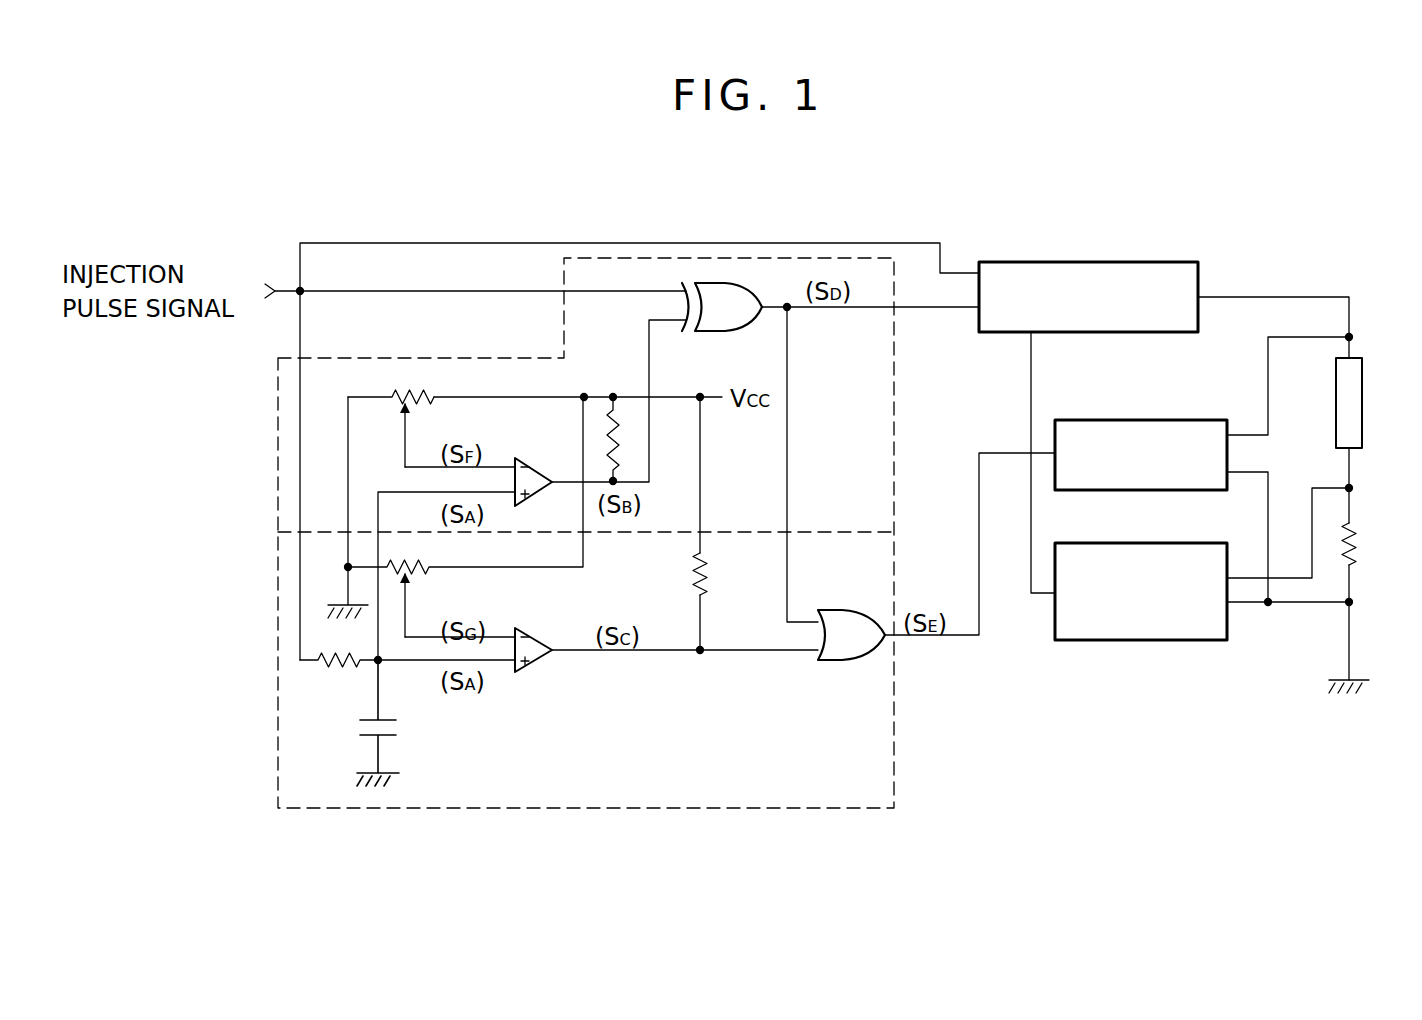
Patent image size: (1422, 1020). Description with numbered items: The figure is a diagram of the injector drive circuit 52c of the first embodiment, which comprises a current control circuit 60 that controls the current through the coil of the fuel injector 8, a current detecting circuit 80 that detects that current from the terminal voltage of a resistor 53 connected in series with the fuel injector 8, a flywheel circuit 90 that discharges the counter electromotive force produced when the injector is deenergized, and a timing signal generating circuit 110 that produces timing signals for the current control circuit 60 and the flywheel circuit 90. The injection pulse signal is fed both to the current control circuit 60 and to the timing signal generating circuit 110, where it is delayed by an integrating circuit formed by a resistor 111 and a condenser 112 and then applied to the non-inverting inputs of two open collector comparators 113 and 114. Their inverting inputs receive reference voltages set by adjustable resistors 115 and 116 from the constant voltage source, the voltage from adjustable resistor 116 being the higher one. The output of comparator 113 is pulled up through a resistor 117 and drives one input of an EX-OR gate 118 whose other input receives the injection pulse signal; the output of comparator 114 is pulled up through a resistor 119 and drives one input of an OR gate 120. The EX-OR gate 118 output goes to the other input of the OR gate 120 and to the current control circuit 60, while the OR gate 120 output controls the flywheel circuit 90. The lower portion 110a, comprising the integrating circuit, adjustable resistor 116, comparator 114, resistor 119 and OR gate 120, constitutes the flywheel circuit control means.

The injector drive circuit 52c is at (828, 218).
The timing signal generating circuit 110 is at (592, 256).
The second comparator section 110a is at (813, 528).
The resistor 111 is at (343, 670).
The condenser 112 is at (402, 722).
The comparator 113 is at (532, 460).
The comparator 114 is at (547, 635).
The adjustable resistor 115 is at (398, 392).
The adjustable resistor 116 is at (465, 517).
The resistor 117 is at (618, 445).
The EX-OR gate 118 is at (714, 333).
The resistor 119 is at (712, 573).
The OR gate 120 is at (845, 662).
The current control circuit 60 is at (1105, 262).
The flywheel circuit 90 is at (1185, 420).
The current detecting circuit 80 is at (1190, 643).
The fuel injector 8 is at (1362, 384).
The resistor 53 is at (1362, 548).